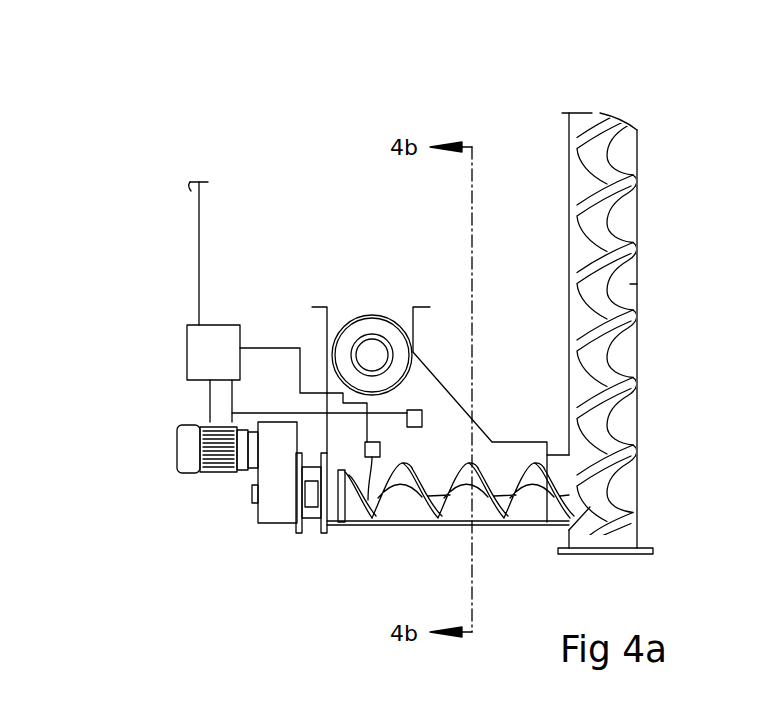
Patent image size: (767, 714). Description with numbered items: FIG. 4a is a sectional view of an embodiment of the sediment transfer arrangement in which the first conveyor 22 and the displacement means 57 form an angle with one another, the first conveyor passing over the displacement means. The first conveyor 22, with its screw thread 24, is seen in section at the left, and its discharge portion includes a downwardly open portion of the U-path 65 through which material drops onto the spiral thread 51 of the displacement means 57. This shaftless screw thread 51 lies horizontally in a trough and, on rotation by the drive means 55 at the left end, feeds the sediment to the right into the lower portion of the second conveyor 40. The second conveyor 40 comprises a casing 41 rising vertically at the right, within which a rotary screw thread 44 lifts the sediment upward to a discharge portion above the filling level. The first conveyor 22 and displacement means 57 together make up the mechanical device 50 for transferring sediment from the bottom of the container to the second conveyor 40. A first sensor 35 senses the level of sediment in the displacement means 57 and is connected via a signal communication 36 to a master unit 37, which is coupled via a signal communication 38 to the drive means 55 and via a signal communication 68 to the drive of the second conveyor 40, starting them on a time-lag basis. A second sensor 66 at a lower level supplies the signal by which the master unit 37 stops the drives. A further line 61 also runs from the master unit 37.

The first conveyor 22 is at (360, 300).
The screw thread 24 is at (386, 332).
The first sensor 35 is at (422, 417).
The signal communication 36 is at (232, 406).
The master unit 37 is at (213, 325).
The signal communication 38 is at (210, 408).
The second conveyor 40 is at (637, 166).
The casing 41 is at (628, 219).
The rotary screw thread 44 is at (637, 284).
The mechanical device 50 is at (435, 370).
The screw thread 51 is at (433, 523).
The drive means 55 is at (217, 474).
The displacement means 57 is at (456, 523).
The signal line 61 is at (263, 348).
The U-path 65 is at (415, 323).
The second sensor 66 is at (360, 523).
The signal communication 68 is at (199, 240).